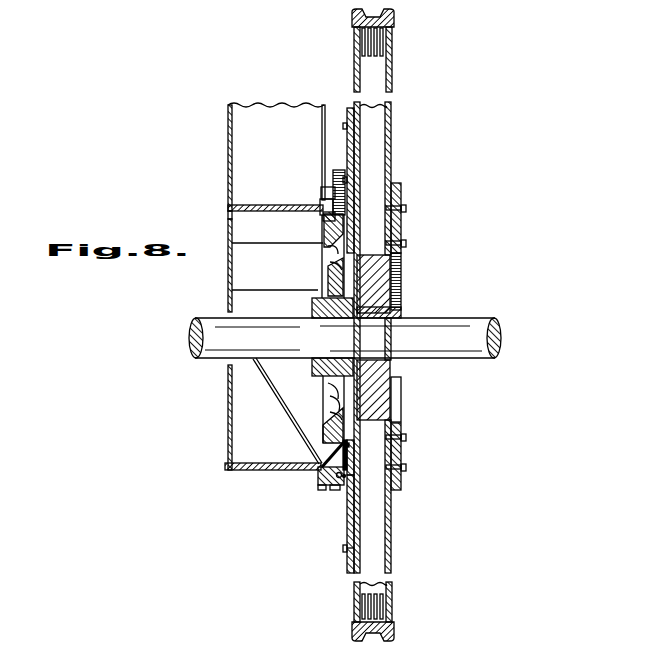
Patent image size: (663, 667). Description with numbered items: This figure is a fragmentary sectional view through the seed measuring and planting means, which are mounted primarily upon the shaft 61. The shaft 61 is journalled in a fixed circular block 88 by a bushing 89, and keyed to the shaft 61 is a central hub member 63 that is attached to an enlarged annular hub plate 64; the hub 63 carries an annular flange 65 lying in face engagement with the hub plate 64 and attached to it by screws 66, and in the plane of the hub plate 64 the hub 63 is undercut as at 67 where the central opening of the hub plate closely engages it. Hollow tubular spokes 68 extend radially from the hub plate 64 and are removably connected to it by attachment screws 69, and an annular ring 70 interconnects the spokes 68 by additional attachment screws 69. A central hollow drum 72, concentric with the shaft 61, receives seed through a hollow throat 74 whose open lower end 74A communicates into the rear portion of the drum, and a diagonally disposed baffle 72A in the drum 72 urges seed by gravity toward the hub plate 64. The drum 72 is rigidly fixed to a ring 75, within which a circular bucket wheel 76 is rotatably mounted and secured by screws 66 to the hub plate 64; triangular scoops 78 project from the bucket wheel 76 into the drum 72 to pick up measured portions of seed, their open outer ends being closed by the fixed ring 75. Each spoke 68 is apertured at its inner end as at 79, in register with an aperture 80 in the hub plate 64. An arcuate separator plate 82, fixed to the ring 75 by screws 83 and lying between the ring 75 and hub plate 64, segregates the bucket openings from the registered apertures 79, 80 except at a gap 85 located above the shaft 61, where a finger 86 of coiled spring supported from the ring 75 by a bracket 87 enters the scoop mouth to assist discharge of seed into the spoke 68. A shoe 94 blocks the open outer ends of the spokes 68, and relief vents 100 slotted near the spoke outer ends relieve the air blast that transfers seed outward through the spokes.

The shaft 61 is at (450, 328).
The central hub member 63 is at (314, 306).
The hub plate 64 is at (347, 527).
The annular flange 65 is at (338, 290).
The screws 66 is at (340, 418).
The undercut 67 is at (354, 361).
The hollow tubular spokes 68 is at (393, 66).
The attachment screws 69 is at (349, 127).
The annular ring 70 is at (402, 192).
The central hollow drum 72 is at (228, 425).
The baffle 72A is at (275, 394).
The hollow throat 74 is at (240, 160).
The open lower end 74A is at (243, 283).
The ring 75 is at (322, 482).
The bucket wheel 76 is at (340, 406).
The scoop 78 is at (323, 226).
The spoke aperture 79 is at (351, 448).
The hub plate aperture 80 is at (347, 477).
The separator plate 82 is at (350, 455).
The screws 83 is at (337, 490).
The gap 85 is at (351, 204).
The finger 86 is at (333, 177).
The bracket 87 is at (333, 191).
The circular block 88 is at (401, 302).
The bushing 89 is at (401, 315).
The shoe 94 is at (394, 17).
The relief vents 100 is at (383, 43).